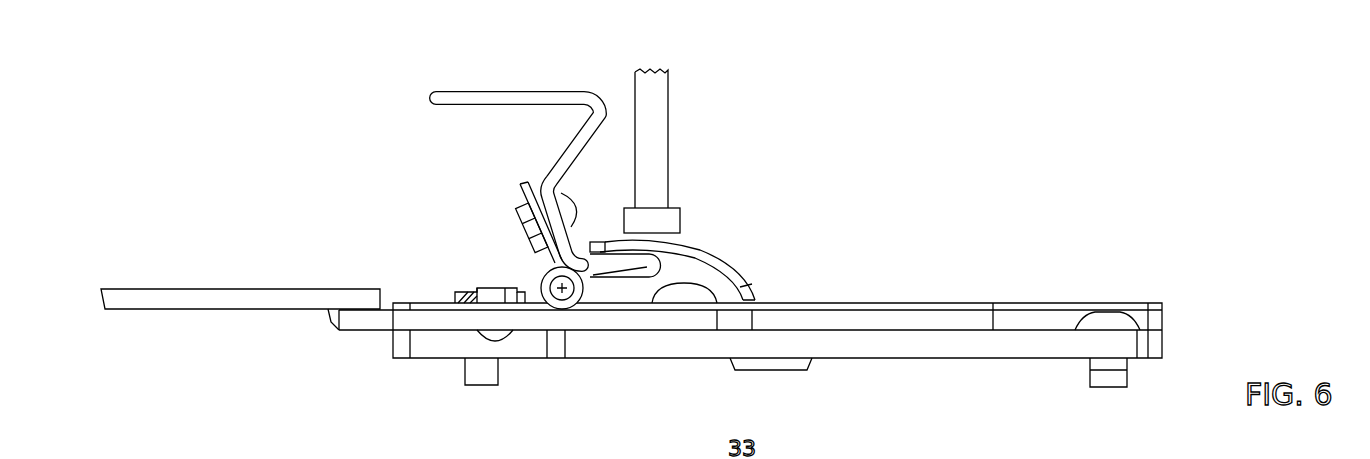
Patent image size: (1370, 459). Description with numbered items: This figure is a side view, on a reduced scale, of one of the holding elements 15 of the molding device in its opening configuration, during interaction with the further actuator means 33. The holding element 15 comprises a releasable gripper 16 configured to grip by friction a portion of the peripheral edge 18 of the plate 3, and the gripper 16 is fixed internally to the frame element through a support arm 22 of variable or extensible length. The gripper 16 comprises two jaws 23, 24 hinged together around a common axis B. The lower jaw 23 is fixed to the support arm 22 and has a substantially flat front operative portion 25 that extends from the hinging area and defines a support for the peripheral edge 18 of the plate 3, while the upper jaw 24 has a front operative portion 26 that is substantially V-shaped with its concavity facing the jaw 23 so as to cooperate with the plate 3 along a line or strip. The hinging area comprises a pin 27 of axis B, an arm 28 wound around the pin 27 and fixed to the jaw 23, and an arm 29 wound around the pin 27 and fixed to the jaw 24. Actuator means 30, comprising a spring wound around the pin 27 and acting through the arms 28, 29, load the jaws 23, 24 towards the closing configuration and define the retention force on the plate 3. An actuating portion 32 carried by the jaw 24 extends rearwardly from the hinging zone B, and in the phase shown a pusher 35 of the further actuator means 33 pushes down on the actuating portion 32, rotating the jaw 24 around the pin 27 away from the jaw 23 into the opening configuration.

The plate 3 is at (240, 301).
The holding element 15 is at (607, 80).
The gripper 16 is at (470, 152).
The peripheral edge 18 is at (348, 297).
The support arm 22 is at (940, 348).
The jaw 23 is at (455, 325).
The jaw 24 is at (460, 92).
The front operative portion 25 is at (385, 320).
The front operative portion 26 is at (525, 92).
The pin 27 is at (548, 282).
The arm 28 is at (532, 304).
The arm 29 is at (537, 222).
The actuator means 30 is at (605, 300).
The actuating portion 32 is at (740, 262).
The further actuator means 33 is at (687, 132).
The pusher 35 is at (655, 148).
The axis B is at (576, 310).